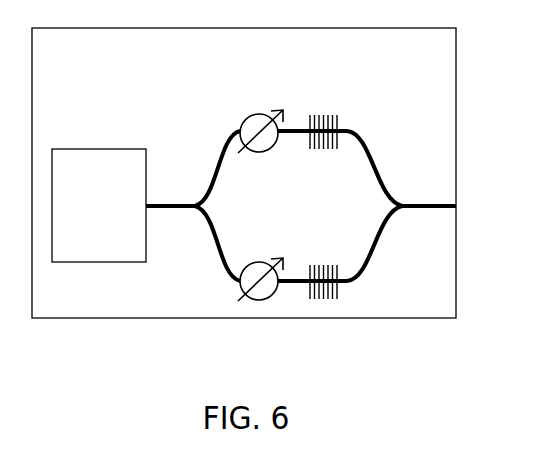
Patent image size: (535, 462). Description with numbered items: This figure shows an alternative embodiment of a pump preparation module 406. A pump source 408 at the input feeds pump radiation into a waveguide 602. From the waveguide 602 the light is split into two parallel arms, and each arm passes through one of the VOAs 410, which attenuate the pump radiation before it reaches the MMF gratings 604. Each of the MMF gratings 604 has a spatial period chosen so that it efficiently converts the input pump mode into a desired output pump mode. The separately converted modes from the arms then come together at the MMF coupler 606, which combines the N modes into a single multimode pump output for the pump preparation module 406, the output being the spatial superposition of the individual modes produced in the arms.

The pump preparation module 406 is at (223, 92).
The pump source 408 is at (78, 246).
The VOAs 410 is at (243, 288).
The waveguide 602 is at (165, 208).
The MMF gratings 604 is at (313, 290).
The MMF coupler 606 is at (402, 208).